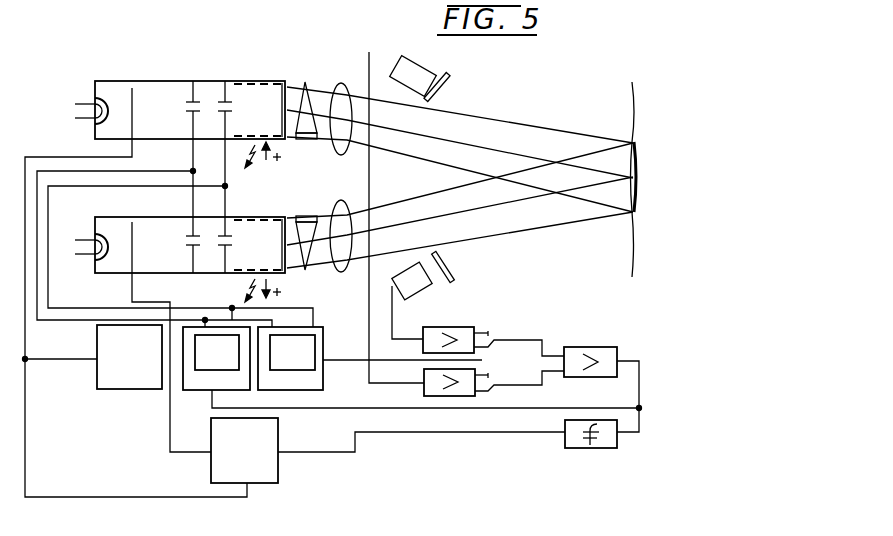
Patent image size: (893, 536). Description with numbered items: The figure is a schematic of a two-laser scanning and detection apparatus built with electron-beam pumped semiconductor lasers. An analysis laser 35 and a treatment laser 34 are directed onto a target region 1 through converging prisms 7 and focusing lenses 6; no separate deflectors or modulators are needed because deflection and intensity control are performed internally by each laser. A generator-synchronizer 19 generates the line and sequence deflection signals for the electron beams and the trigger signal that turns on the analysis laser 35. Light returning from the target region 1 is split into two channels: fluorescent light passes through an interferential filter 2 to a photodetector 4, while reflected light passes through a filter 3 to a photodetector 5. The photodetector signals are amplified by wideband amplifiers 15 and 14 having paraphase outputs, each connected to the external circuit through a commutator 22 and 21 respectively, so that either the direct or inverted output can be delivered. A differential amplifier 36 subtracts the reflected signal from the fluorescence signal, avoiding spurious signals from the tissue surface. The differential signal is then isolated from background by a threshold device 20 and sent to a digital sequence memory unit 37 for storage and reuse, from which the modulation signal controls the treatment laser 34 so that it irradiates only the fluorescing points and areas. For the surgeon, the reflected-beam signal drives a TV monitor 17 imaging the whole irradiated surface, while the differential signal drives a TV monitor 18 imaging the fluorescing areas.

The target region 1 is at (633, 121).
The interferential light filter for fluorescence 2 is at (447, 92).
The interferential light filter for reflected light 3 is at (447, 262).
The photodetector 4 is at (418, 61).
The photodetector 5 is at (417, 296).
The focusing lens 6 is at (333, 148).
The converging prism 7 is at (307, 138).
The wideband amplifier 14 is at (424, 394).
The wideband amplifier 15 is at (452, 327).
The TV monitor 17 is at (319, 390).
The TV monitor 18 is at (186, 390).
The generator-synchronizer 19 is at (100, 391).
The threshold device 20 is at (578, 448).
The commutator 21 is at (487, 392).
The commutator 22 is at (489, 333).
The treatment laser 34 is at (115, 217).
The analysis laser 35 is at (157, 81).
The differential amplifier 36 is at (580, 347).
The digital sequence memory unit 37 is at (259, 483).